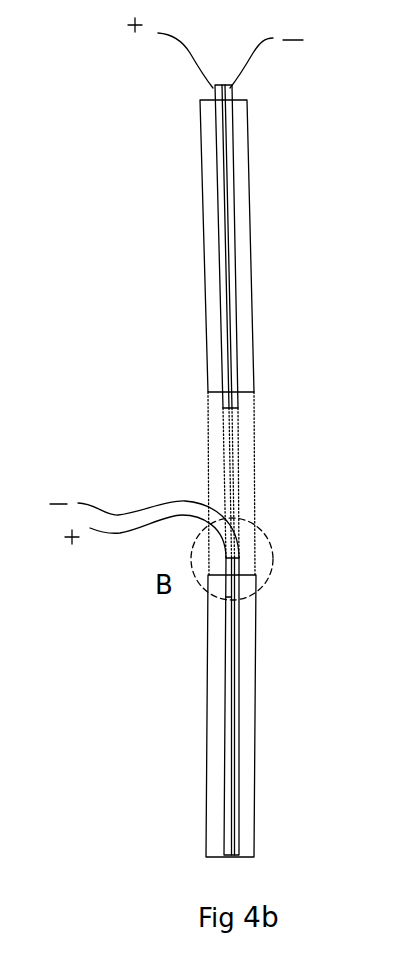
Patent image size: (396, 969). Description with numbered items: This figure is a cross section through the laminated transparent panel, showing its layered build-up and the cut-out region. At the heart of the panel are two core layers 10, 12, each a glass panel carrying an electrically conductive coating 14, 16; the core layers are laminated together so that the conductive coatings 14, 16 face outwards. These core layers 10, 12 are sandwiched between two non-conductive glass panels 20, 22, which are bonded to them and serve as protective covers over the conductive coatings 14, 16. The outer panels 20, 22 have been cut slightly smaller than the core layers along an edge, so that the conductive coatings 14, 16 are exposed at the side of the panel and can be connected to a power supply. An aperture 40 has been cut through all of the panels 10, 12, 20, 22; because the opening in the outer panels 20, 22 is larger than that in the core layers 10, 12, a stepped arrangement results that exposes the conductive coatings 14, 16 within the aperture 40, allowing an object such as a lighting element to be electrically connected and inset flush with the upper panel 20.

The core layer 10 is at (238, 645).
The core layer 12 is at (230, 685).
The electrically conductive coating 14 is at (233, 90).
The electrically conductive coating 16 is at (214, 90).
The non-conductive glass panel 20 is at (243, 135).
The non-conductive glass panel 22 is at (210, 138).
The aperture 40 is at (266, 462).